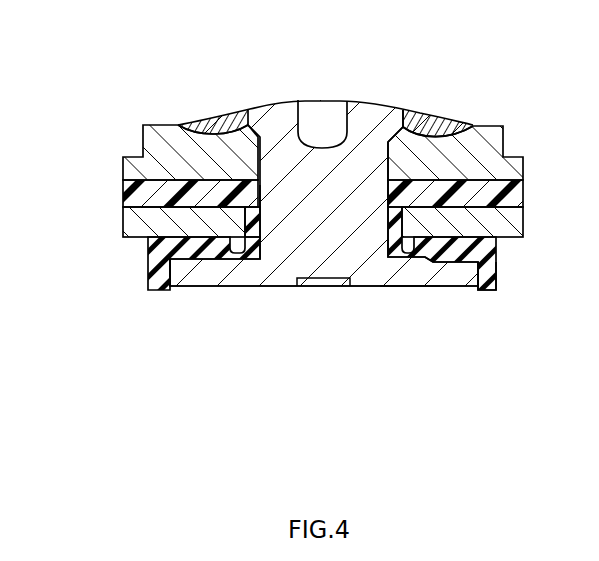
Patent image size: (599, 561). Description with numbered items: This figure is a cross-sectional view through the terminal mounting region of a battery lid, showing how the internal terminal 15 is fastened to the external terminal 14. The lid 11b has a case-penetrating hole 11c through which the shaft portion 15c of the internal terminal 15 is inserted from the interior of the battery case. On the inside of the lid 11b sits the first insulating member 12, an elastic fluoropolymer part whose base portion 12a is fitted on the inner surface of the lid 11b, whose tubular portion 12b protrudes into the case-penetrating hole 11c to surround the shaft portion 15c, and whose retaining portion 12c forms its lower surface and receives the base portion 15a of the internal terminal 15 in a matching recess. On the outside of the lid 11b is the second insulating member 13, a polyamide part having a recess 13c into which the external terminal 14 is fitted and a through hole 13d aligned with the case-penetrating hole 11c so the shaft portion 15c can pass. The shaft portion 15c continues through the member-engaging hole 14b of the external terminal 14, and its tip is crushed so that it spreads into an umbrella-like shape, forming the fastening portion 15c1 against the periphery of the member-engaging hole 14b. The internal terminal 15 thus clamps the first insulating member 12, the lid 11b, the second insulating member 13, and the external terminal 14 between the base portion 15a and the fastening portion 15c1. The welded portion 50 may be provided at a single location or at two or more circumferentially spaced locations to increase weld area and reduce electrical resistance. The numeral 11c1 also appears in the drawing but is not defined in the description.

The lid 11b is at (121, 222).
The case-penetrating hole 11c is at (372, 287).
The bottom surface portion 11c1 is at (408, 287).
The first insulating member 12 is at (144, 273).
The base portion 12a is at (472, 237).
The tubular portion 12b is at (243, 222).
The retaining portion 12c is at (487, 291).
The second insulating member 13 is at (116, 187).
The recess 13c is at (482, 178).
The through hole 13d is at (262, 198).
The external terminal 14 is at (150, 122).
The member-engaging hole 14b is at (368, 150).
The internal terminal 15 is at (186, 302).
The base portion 15a is at (467, 263).
The shaft portion 15c is at (466, 118).
The fastening portion 15c1 is at (395, 105).
The welded portion 50 is at (217, 117).